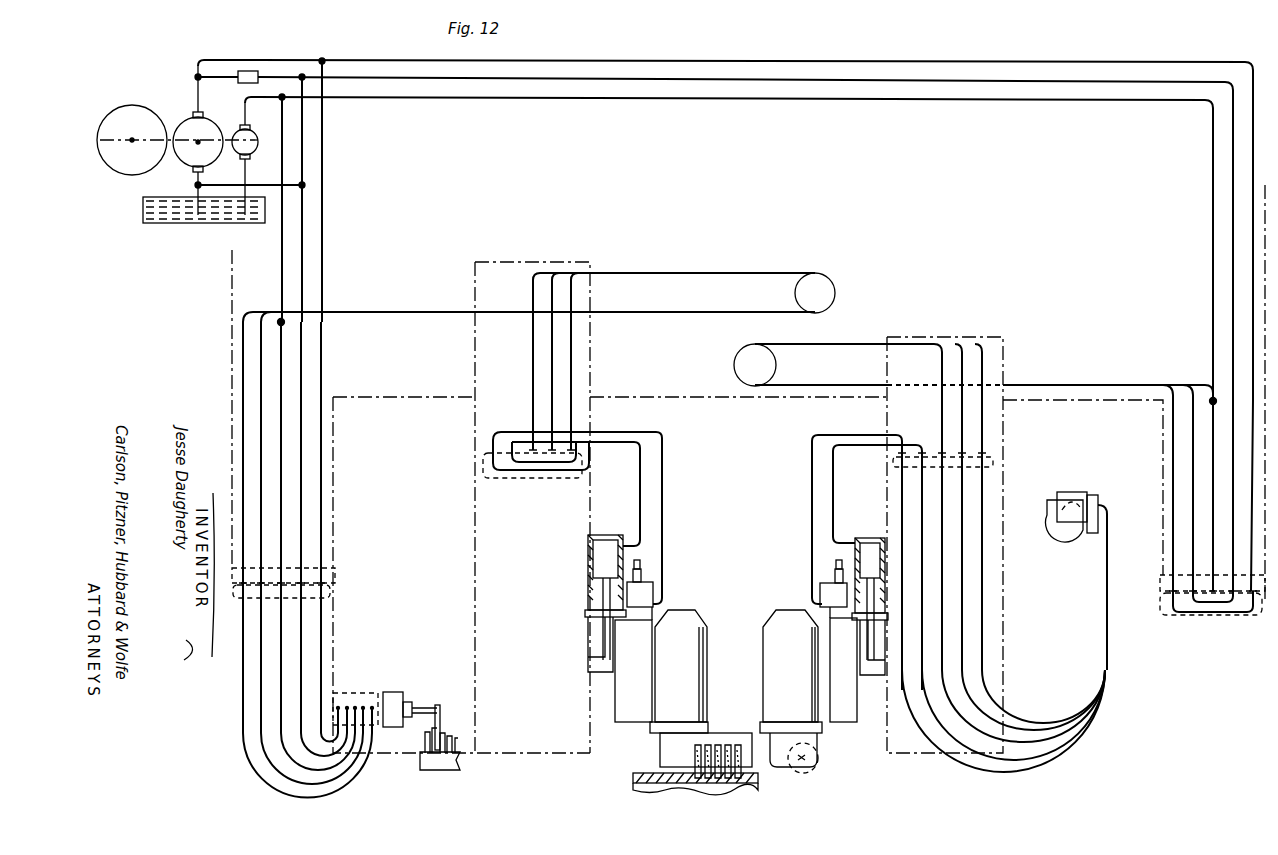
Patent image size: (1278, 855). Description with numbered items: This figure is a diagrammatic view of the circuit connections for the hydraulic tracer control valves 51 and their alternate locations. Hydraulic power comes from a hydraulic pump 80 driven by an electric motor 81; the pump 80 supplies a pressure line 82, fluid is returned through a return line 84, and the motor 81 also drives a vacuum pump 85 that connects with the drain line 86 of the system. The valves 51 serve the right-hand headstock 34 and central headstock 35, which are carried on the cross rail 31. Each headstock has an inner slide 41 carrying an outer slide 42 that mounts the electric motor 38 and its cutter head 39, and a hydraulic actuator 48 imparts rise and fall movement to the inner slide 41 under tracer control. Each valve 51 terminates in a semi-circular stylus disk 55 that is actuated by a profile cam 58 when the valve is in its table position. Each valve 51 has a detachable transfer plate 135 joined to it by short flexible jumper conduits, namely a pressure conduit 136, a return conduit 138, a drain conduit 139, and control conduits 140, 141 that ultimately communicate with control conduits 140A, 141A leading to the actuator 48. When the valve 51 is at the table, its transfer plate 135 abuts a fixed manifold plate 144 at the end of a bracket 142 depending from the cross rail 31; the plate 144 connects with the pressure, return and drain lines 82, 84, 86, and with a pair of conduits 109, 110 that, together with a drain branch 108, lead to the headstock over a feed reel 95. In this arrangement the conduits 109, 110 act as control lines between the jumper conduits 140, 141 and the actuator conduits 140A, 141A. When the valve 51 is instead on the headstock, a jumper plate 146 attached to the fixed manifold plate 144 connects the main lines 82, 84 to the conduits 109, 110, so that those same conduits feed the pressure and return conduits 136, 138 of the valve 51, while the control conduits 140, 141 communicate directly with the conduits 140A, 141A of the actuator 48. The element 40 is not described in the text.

The cross rail 31 is at (420, 400).
The right-hand headstock 34 is at (1004, 586).
The central headstock 35 is at (470, 577).
The electric motor 38 is at (707, 636).
The cutter head 39 is at (666, 754).
The needles 40 is at (732, 746).
The inner slide 41 is at (647, 672).
The outer slide 42 is at (648, 580).
The hydraulic actuator 48 is at (610, 535).
The tracer control valve 51 is at (395, 689).
The stylus disk 55 is at (440, 712).
The profile cam 58 is at (450, 727).
The hydraulic pump 80 is at (186, 121).
The electric motor 81 is at (136, 174).
The pressure line 82 is at (345, 58).
The return line 84 is at (417, 98).
The vacuum pump 85 is at (250, 150).
The drain line 86 is at (349, 97).
The feed reel 95 is at (831, 284).
The branch drain line 108 is at (281, 318).
The hydraulic conduit 109 is at (552, 348).
The hydraulic conduit 110 is at (571, 363).
The transfer plate 135 is at (331, 596).
The hydraulic pressure conduit 136 is at (321, 627).
The hydraulic return conduit 138 is at (301, 648).
The hydraulic drain conduit 139 is at (281, 663).
The hydraulic control conduit 140 is at (243, 712).
The hydraulic control conduit 141 is at (258, 740).
The jumper control conduit 140A is at (662, 481).
The jumper control conduit 141A is at (640, 500).
The depending bracket 142 is at (334, 548).
The fixed manifold plate 144 is at (335, 579).
The jumper plate 146 is at (538, 478).